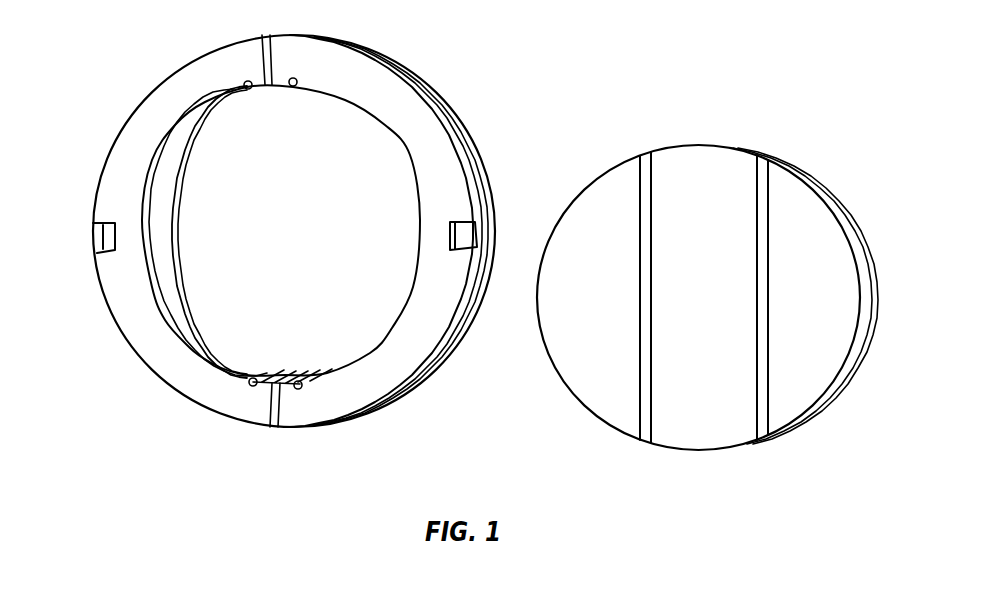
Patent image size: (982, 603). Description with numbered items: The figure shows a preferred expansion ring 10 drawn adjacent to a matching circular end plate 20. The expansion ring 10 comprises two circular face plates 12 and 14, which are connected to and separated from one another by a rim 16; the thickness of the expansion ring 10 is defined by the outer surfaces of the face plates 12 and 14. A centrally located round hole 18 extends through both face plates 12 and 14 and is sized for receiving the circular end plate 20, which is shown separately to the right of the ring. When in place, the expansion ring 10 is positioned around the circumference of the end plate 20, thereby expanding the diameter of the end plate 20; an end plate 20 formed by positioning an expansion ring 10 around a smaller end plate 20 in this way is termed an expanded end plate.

The expansion ring 10 is at (128, 398).
The circular face plate 12 is at (93, 188).
The circular face plate 14 is at (480, 146).
The rim 16 is at (428, 97).
The round hole 18 is at (230, 142).
The end plate 20 is at (842, 168).